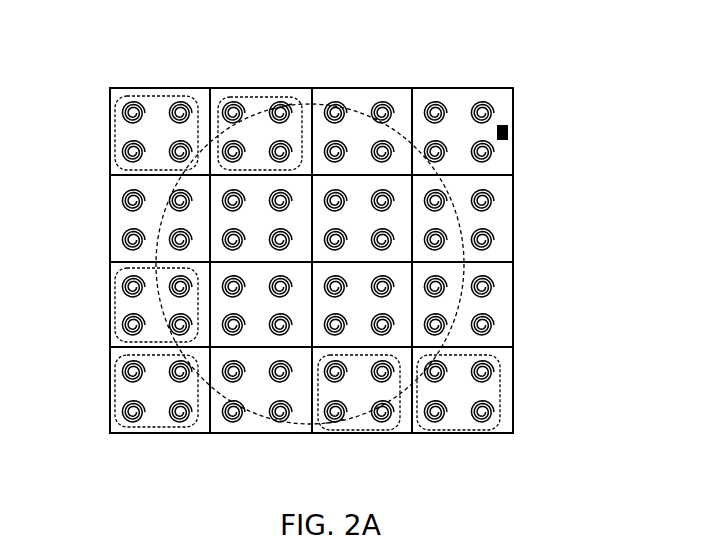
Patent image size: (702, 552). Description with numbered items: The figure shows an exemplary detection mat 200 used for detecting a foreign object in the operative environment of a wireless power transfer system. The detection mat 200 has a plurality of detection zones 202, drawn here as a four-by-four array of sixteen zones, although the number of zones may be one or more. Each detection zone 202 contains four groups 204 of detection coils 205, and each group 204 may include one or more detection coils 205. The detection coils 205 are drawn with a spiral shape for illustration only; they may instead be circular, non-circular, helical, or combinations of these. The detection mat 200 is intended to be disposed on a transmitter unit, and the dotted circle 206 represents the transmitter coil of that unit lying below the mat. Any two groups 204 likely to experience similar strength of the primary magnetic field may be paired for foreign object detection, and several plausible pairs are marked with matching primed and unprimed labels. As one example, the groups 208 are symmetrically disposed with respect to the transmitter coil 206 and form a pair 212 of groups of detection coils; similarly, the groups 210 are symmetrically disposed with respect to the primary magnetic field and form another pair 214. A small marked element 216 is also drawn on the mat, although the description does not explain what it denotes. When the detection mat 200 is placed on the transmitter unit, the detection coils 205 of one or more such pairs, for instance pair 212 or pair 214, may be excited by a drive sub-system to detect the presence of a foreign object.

The detection mat 200 is at (474, 36).
The detection zones 202 is at (112, 274).
The groups of detection coils 204 is at (115, 358).
The detection coils 205 is at (493, 315).
The transmitter coil 206 is at (515, 177).
The groups of detection coils forming a pair 208 is at (247, 96).
The groups of detection coils forming another pair 210 is at (157, 94).
The pair of groups of detection coils 212 is at (291, 90).
The another pair of groups of detection coils 214 is at (106, 130).
The sensor 216 is at (512, 130).